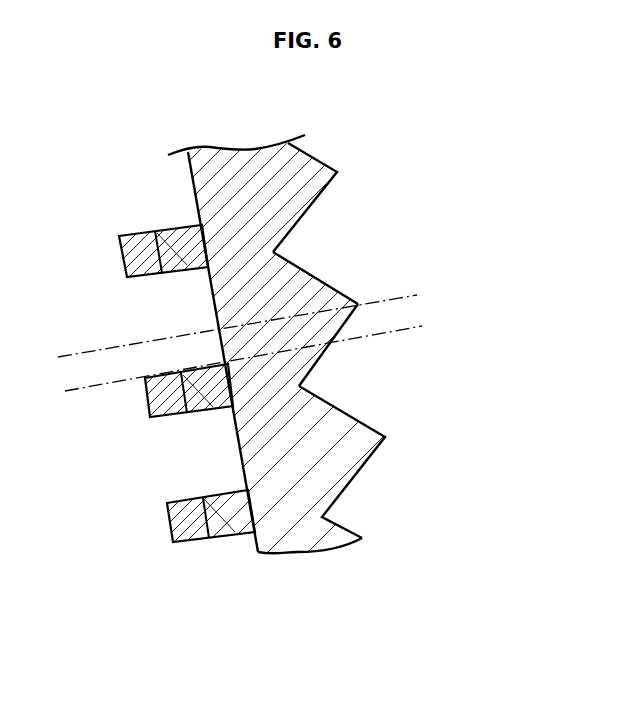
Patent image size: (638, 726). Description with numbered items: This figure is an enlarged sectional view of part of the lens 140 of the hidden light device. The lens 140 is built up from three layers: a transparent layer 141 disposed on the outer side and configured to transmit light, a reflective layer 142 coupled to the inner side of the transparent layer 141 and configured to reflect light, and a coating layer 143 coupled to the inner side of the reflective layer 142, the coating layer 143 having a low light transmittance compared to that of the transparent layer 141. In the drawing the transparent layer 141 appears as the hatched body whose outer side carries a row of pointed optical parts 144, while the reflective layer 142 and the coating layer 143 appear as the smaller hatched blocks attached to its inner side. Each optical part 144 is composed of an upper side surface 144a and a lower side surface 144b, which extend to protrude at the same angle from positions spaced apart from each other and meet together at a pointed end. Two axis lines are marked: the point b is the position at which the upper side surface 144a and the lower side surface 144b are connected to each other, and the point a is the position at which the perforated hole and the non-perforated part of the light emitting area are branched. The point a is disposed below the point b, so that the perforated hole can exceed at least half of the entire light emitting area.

The lens 140 is at (437, 612).
The transparent layer 141 is at (297, 528).
The reflective layer 142 is at (233, 520).
The coating layer 143 is at (192, 525).
The optical part 144 is at (463, 188).
The upper side surface 144a is at (320, 278).
The lower side surface 144b is at (322, 355).
The point a is at (233, 366).
The point b is at (228, 334).